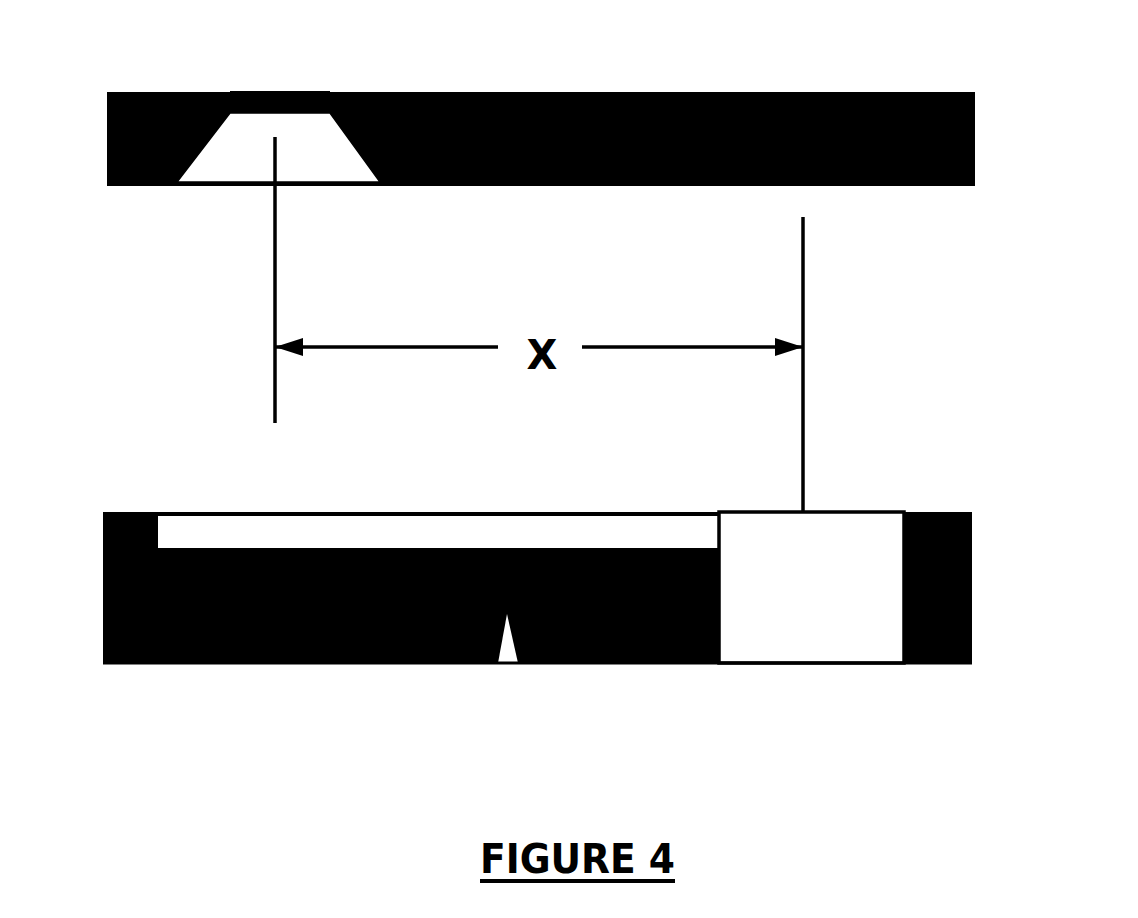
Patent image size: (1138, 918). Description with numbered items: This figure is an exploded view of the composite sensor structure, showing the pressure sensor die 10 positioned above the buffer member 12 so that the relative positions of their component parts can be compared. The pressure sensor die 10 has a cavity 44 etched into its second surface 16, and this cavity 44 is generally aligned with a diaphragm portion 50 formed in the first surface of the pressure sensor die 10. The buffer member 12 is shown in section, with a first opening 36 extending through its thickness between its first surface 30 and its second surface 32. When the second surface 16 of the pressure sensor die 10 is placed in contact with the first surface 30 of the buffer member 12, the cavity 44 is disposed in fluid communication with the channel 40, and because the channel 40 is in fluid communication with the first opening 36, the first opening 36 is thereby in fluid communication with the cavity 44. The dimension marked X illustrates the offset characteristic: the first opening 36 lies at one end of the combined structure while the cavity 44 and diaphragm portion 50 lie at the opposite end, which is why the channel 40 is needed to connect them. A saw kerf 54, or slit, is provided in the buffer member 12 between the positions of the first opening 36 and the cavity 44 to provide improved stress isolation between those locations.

The pressure sensor die 10 is at (912, 87).
The buffer member 12 is at (220, 665).
The second surface 16 is at (472, 185).
The first surface 30 is at (938, 508).
The second surface 32 is at (607, 665).
The first opening 36 is at (822, 635).
The channel 40 is at (207, 535).
The cavity 44 is at (237, 173).
The diaphragm portion 50 is at (280, 93).
The saw kerf 54 is at (505, 648).